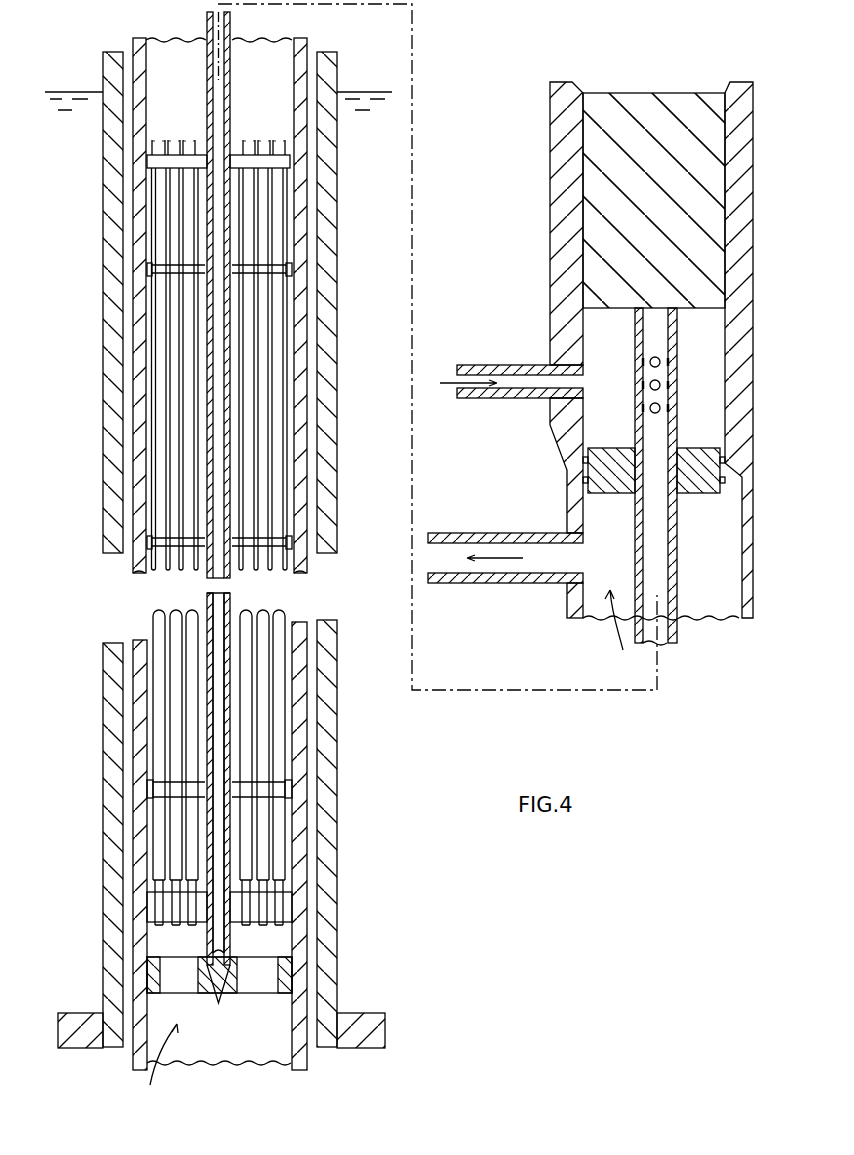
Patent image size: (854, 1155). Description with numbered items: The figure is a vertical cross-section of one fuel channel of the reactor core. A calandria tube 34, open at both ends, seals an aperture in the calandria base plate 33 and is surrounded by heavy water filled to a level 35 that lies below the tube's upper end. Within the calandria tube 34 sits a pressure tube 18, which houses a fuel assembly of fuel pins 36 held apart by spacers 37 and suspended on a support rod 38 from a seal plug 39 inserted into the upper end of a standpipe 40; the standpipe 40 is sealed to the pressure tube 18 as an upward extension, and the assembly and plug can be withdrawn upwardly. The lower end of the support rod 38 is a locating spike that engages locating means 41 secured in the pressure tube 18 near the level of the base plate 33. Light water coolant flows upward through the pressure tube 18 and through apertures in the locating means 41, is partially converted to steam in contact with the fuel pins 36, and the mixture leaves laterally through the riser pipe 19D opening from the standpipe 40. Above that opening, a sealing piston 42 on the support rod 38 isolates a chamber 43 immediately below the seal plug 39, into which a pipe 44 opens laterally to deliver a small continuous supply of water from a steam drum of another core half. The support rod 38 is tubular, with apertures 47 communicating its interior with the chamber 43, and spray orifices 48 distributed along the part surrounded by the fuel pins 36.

The pressure tube 18 is at (304, 1011).
The riser pipe 19D is at (493, 583).
The base plate 33 is at (350, 1048).
The calandria tube 34 is at (338, 932).
The level 35 is at (80, 92).
The fuel pins 36 is at (280, 847).
The spacers 37 is at (291, 262).
The support rod 38 is at (230, 107).
The seal plug 39 is at (634, 93).
The standpipe 40 is at (550, 216).
The locating means 41 is at (228, 996).
The sealing piston 42 is at (610, 493).
The chamber 43 is at (712, 340).
The pipe 44 is at (495, 365).
The apertures 47 is at (662, 363).
The spray orifices 48 is at (222, 183).